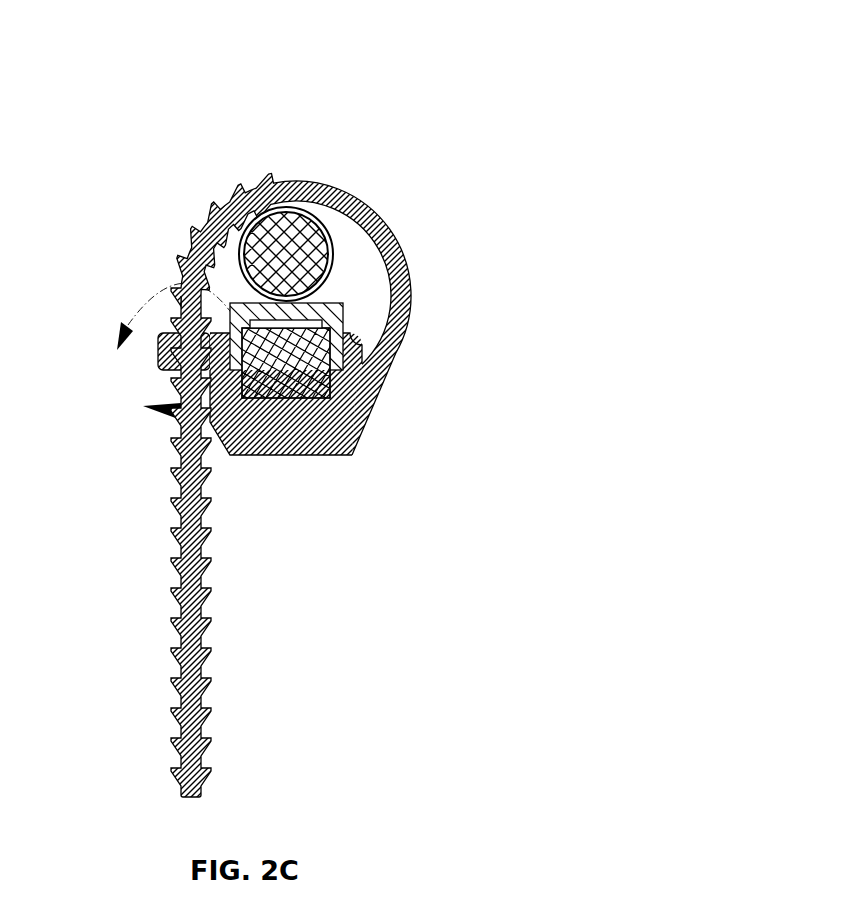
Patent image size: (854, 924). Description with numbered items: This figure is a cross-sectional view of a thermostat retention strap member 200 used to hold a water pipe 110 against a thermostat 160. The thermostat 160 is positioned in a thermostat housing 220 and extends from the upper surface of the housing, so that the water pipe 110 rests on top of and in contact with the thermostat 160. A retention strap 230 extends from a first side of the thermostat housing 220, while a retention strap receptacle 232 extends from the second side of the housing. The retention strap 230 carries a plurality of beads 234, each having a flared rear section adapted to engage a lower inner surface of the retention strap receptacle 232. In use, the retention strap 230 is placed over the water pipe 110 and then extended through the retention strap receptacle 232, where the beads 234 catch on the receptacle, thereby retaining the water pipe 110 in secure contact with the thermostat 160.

The thermostat retention strap member 200 is at (271, 434).
The water pipe 110 is at (267, 237).
The thermostat 160 is at (335, 315).
The thermostat housing 220 is at (323, 430).
The retention strap 230 is at (405, 263).
The retention strap receptacle 232 is at (165, 343).
The beads 234 is at (197, 596).